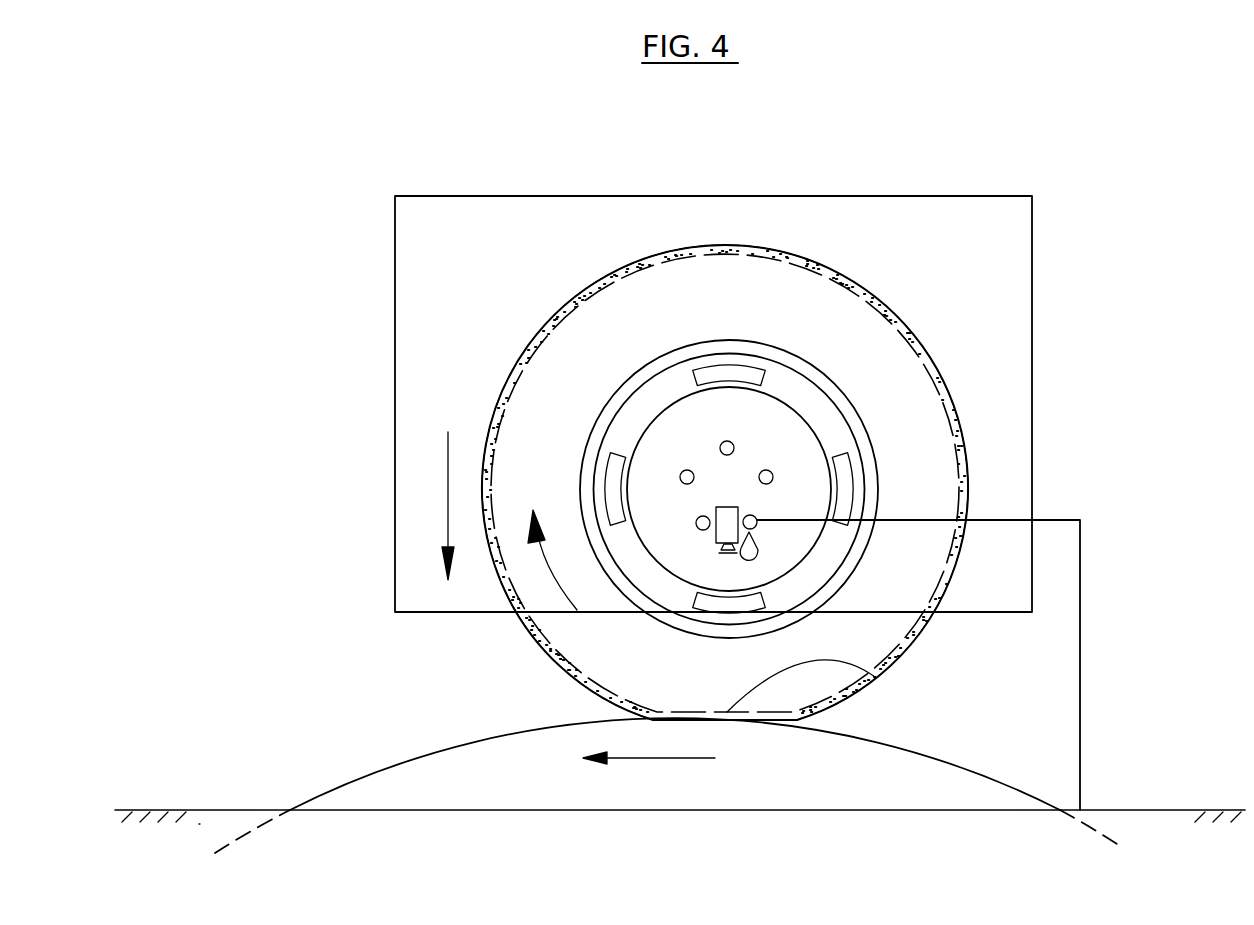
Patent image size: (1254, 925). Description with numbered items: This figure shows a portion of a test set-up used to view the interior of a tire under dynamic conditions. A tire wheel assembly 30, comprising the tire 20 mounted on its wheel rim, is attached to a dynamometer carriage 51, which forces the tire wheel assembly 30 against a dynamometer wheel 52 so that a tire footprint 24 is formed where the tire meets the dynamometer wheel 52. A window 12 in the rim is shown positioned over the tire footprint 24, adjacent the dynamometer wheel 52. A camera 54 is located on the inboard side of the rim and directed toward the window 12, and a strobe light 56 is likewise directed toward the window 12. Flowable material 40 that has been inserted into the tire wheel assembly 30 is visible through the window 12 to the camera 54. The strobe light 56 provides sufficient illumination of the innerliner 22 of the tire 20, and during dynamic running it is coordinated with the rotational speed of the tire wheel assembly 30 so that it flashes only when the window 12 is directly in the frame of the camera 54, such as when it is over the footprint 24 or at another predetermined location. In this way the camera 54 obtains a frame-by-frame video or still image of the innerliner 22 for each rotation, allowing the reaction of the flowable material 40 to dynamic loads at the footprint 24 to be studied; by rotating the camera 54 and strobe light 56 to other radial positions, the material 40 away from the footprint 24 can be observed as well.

The window 12 is at (727, 607).
The tire 20 is at (781, 305).
The innerliner 22 is at (958, 433).
The tire footprint 24 is at (730, 720).
The tire wheel assembly 30 is at (948, 373).
The flowable material 40 is at (643, 262).
The dynamometer carriage 51 is at (988, 259).
The dynamometer wheel 52 is at (875, 794).
The camera 54 is at (729, 520).
The strobe light 56 is at (757, 558).